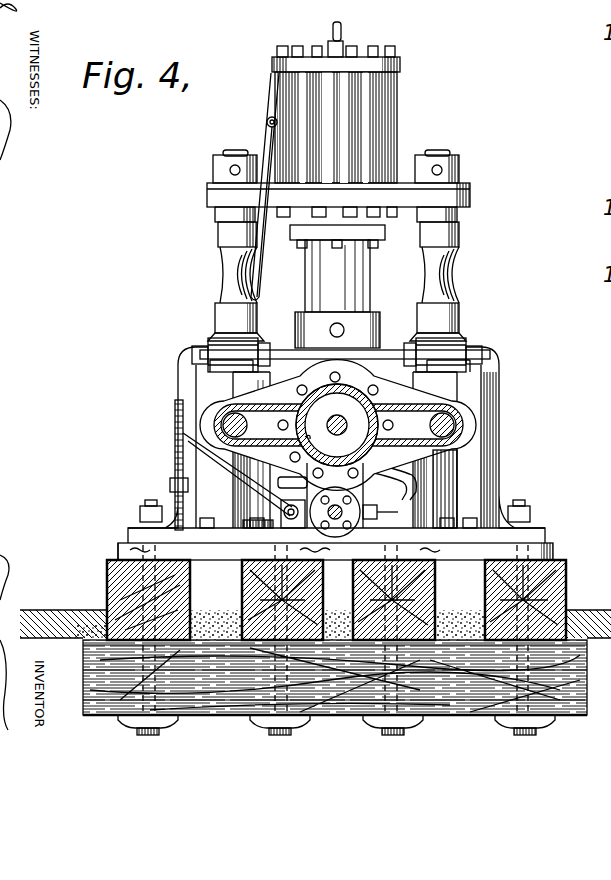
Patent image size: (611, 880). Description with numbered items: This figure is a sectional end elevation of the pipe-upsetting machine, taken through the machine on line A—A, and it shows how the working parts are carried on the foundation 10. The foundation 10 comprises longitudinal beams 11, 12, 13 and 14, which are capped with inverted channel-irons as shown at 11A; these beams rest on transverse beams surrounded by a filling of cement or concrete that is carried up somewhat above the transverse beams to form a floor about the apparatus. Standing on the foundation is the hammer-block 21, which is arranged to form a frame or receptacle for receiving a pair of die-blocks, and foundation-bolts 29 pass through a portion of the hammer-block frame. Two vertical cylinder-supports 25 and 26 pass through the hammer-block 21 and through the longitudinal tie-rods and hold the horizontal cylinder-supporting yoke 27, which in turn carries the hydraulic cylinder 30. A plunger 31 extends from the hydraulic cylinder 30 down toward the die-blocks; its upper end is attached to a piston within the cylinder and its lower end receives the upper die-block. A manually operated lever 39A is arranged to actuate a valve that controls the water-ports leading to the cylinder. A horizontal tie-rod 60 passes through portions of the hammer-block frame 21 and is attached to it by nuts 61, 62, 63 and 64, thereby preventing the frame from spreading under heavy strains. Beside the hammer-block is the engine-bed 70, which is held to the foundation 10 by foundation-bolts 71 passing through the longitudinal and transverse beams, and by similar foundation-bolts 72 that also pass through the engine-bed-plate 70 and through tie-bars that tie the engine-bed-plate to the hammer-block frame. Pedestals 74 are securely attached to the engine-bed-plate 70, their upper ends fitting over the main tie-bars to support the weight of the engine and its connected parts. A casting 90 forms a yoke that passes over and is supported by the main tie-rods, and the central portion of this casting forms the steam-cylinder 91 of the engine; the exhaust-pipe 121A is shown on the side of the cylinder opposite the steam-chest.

The foundation 10 is at (604, 698).
The longitudinal beam 11 is at (108, 585).
The inverted channel-iron cap 11A is at (108, 560).
The longitudinal beam 12 is at (242, 587).
The longitudinal beam 13 is at (404, 600).
The longitudinal beam 14 is at (567, 572).
The hammer-block 21 is at (483, 467).
The vertical cylinder-support 25 is at (230, 275).
The vertical cylinder-support 26 is at (428, 275).
The horizontal cylinder-supporting yoke 27 is at (470, 420).
The foundation-bolt 29 is at (147, 505).
The hydraulic cylinder 30 is at (398, 113).
The plunger 31 is at (322, 282).
The manually operated lever 39A is at (268, 147).
The horizontal tie-rod 60 is at (377, 347).
The nut 61 is at (197, 340).
The nut 62 is at (255, 343).
The nut 63 is at (420, 343).
The nut 64 is at (488, 343).
The engine-bed 70 is at (550, 542).
The foundation-bolt 71 is at (147, 705).
The foundation-bolt 72 is at (273, 697).
The pedestal 74 is at (440, 478).
The casting 90 is at (433, 402).
The steam-cylinder 91 is at (173, 463).
The exhaust-pipe 121A is at (405, 516).